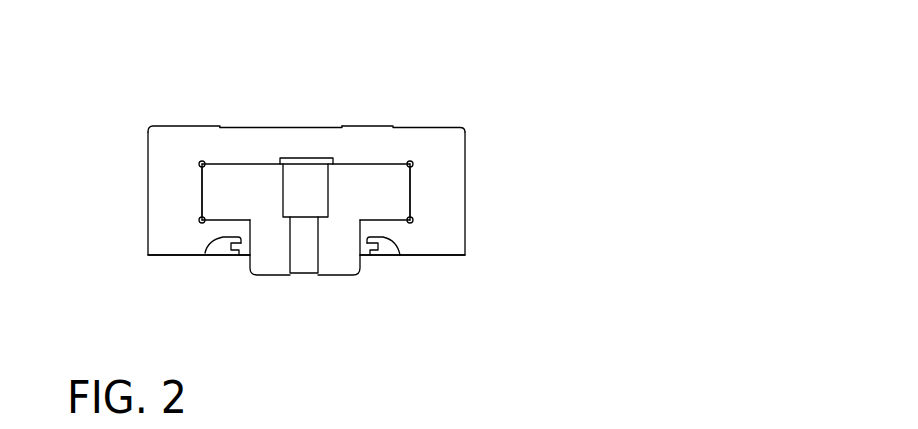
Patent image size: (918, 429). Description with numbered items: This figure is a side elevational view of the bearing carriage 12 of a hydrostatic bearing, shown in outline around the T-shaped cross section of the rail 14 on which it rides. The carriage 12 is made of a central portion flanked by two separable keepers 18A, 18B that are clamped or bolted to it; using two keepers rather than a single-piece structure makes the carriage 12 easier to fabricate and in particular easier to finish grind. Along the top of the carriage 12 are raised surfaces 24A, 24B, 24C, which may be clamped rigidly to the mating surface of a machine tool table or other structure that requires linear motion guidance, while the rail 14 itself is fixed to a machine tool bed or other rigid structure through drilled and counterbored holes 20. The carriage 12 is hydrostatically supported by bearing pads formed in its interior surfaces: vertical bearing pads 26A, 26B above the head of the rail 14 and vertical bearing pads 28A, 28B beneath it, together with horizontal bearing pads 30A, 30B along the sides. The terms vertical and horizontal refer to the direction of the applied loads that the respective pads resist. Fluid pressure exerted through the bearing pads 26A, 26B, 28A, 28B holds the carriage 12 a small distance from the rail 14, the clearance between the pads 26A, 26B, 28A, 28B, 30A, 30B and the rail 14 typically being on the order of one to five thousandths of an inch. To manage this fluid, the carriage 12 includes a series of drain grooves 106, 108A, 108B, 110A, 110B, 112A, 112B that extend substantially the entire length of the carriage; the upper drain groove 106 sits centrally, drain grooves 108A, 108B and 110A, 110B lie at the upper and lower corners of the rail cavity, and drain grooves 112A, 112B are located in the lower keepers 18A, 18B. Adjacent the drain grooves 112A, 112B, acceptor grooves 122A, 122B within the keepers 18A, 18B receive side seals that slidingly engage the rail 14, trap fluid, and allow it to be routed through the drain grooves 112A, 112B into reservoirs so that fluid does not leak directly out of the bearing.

The carriage 12 is at (172, 145).
The rail 14 is at (338, 247).
The keeper 18A is at (443, 247).
The keeper 18B is at (163, 242).
The drilled and counterbored holes 20 is at (307, 198).
The raised surface 24A is at (432, 127).
The raised surface 24B is at (188, 126).
The raised surface 24C is at (302, 127).
The vertical bearing pad 26A is at (368, 164).
The vertical bearing pad 26B is at (247, 164).
The vertical bearing pad 28A is at (382, 222).
The vertical bearing pad 28B is at (227, 222).
The horizontal bearing pad 30A is at (476, 192).
The horizontal bearing pad 30B is at (202, 192).
The drain groove 106 is at (313, 158).
The drain groove 108A is at (410, 164).
The drain groove 108B is at (202, 164).
The drain groove 110A is at (410, 220).
The drain groove 110B is at (202, 220).
The drain groove 112A is at (386, 224).
The drain groove 112B is at (243, 222).
The acceptor groove 122A is at (374, 252).
The acceptor groove 122B is at (237, 250).